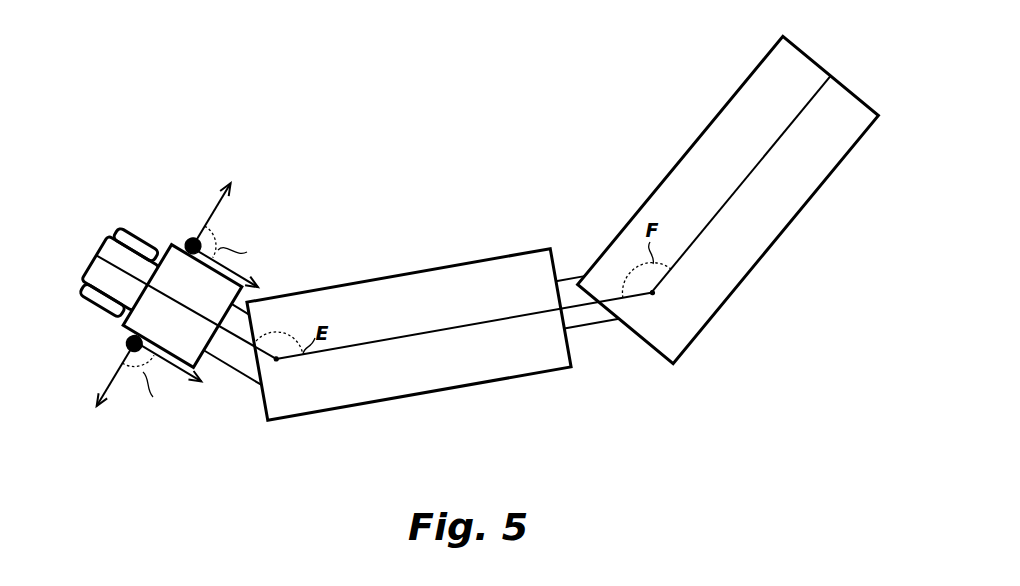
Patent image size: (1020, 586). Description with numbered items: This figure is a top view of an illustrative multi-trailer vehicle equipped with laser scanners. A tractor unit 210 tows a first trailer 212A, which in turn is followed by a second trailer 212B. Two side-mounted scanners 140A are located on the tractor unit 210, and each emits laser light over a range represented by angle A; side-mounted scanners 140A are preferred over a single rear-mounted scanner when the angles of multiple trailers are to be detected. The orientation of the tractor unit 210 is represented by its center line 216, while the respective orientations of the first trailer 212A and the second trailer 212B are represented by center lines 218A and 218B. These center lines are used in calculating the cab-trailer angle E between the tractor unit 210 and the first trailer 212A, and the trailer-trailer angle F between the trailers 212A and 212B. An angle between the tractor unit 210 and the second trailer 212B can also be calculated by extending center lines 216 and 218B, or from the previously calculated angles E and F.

The tractor unit 210 is at (106, 236).
The center line 216 is at (120, 269).
The side-mounted scanner 140A is at (191, 239).
The first trailer 212A is at (348, 280).
The center line 218A is at (415, 335).
The second trailer 212B is at (681, 158).
The center line 218B is at (750, 173).